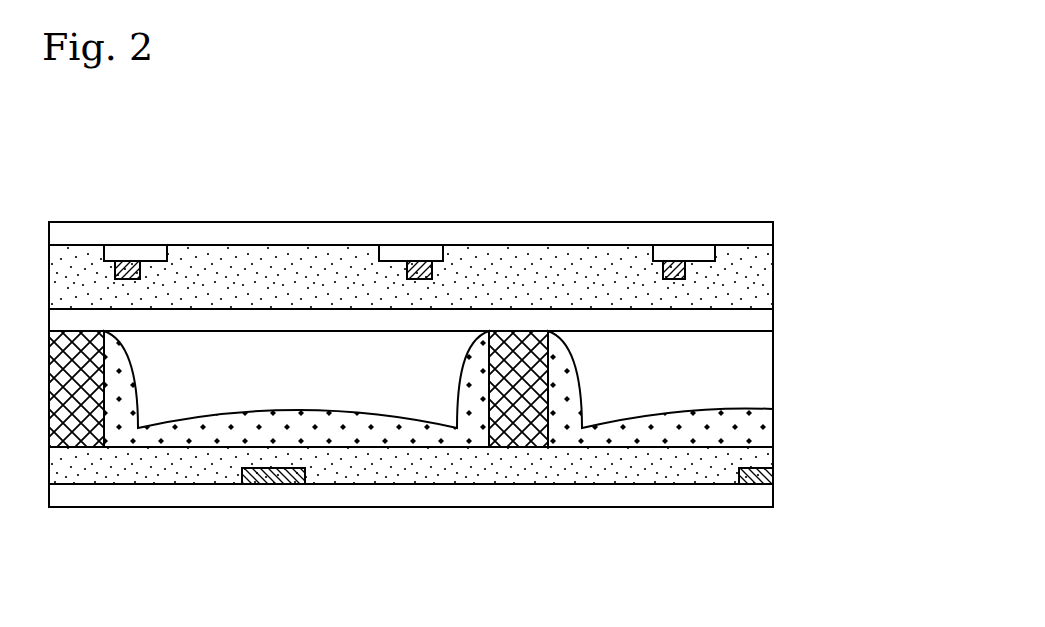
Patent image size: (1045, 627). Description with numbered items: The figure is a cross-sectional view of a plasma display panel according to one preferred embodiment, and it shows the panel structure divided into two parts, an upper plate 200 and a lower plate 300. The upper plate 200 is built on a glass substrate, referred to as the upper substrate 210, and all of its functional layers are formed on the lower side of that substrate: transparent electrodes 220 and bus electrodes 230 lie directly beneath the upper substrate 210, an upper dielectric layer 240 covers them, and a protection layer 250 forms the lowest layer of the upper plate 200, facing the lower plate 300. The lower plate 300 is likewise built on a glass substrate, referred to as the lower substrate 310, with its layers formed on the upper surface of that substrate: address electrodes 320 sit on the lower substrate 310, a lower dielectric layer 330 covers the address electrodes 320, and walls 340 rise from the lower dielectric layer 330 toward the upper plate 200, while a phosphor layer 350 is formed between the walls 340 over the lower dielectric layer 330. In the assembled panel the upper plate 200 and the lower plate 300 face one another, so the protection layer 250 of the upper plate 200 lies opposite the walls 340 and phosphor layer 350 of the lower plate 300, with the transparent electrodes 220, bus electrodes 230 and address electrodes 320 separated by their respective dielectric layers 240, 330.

The upper plate 200 is at (781, 252).
The upper substrate 210 is at (500, 226).
The transparent electrodes 220 is at (677, 250).
The bus electrodes 230 is at (686, 268).
The upper dielectric layer 240 is at (596, 246).
The protection layer 250 is at (762, 317).
The lower plate 300 is at (790, 413).
The lower substrate 310 is at (713, 504).
The address electrodes 320 is at (275, 482).
The lower dielectric layer 330 is at (763, 450).
The walls 340 is at (523, 437).
The phosphor layer 350 is at (397, 433).